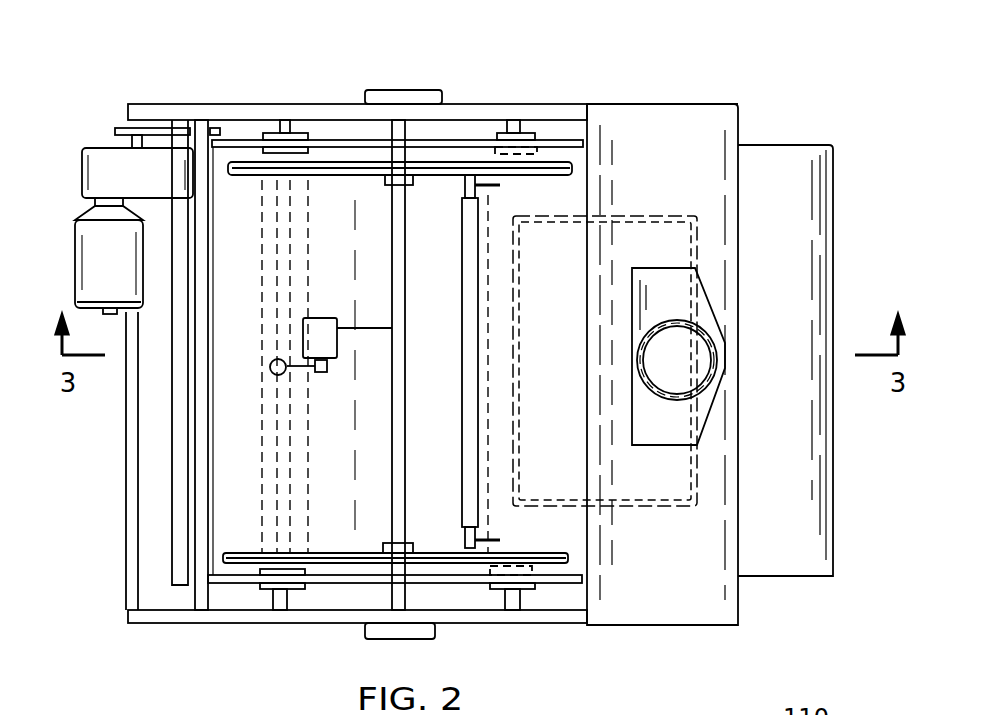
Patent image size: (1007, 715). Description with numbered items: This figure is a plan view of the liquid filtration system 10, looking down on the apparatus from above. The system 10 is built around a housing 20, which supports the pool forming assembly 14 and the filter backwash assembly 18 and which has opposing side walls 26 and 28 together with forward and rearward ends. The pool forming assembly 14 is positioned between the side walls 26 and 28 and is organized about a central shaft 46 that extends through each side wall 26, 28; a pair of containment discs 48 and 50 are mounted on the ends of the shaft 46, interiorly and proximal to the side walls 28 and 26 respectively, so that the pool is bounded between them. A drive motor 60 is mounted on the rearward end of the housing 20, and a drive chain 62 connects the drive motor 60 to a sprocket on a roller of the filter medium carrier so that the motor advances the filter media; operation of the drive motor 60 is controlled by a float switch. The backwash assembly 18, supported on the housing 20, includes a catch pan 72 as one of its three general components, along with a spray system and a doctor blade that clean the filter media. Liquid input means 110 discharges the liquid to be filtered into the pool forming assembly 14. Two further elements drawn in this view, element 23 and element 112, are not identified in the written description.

The liquid filtration system 10 is at (808, 118).
The pool forming assembly 14 is at (357, 568).
The filter backwash assembly 18 is at (668, 628).
The housing 20 is at (298, 103).
The frame members 23 is at (200, 518).
The side wall 26 is at (552, 105).
The side wall 28 is at (520, 622).
The central shaft 46 is at (398, 497).
The containment disc 48 is at (330, 178).
The containment disc 50 is at (338, 553).
The drive motor 60 is at (98, 278).
The drive chain 62 is at (165, 130).
The catch pan 72 is at (322, 325).
The liquid input means 110 is at (715, 335).
The guide shaft 112 is at (460, 340).